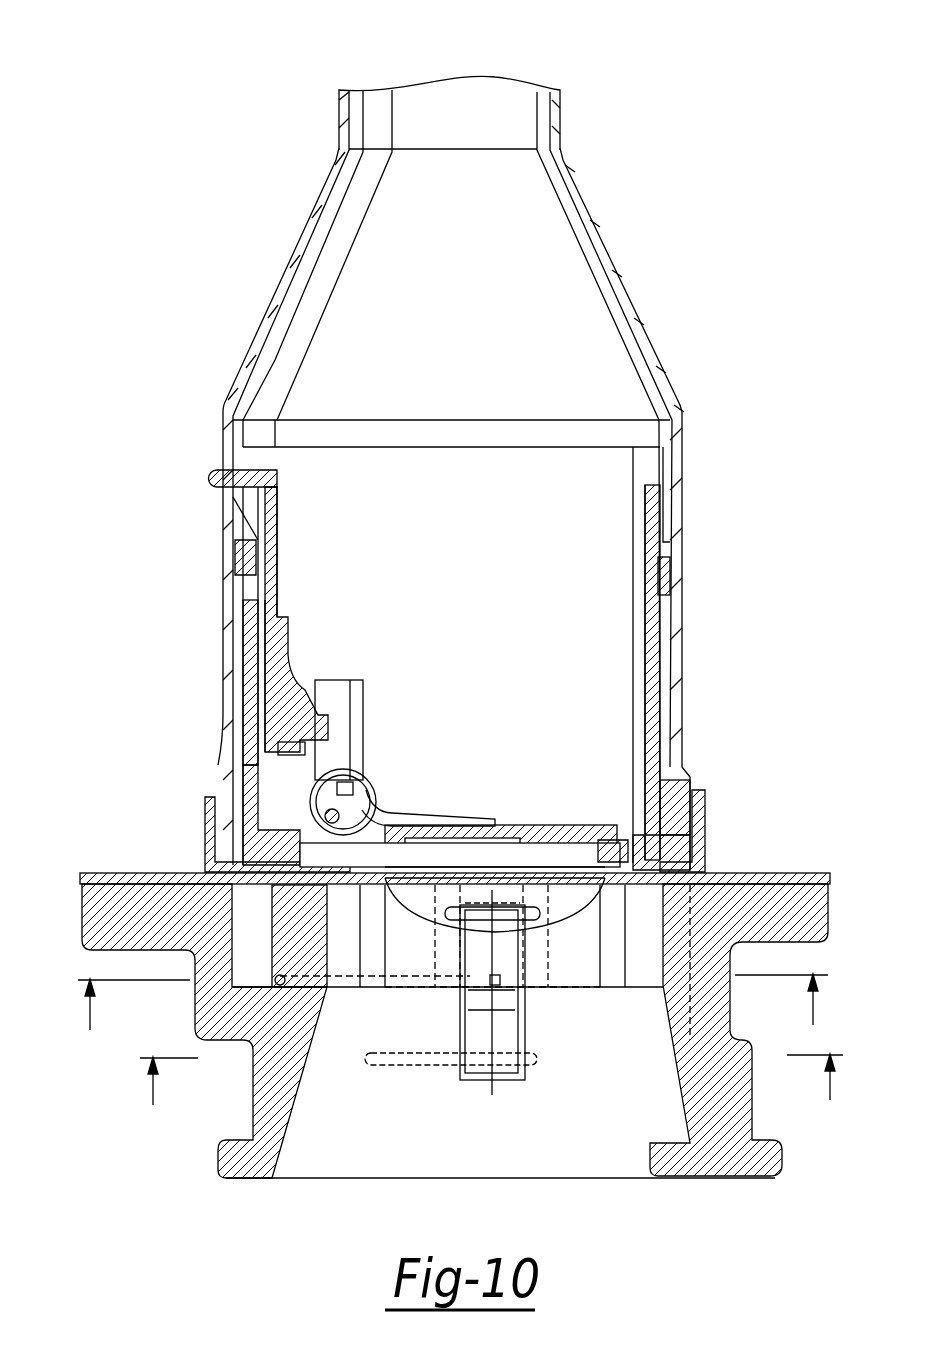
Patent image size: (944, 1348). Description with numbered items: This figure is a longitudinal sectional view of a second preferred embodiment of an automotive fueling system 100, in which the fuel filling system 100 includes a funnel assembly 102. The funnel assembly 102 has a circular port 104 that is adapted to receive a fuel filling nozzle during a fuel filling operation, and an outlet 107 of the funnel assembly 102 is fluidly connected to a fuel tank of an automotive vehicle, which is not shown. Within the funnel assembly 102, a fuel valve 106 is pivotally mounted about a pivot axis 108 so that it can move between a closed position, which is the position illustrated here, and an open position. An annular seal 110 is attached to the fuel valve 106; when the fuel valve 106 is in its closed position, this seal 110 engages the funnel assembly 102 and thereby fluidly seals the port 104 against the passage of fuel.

The fuel filling system 100 is at (770, 767).
The funnel assembly 102 is at (205, 833).
The circular port 104 is at (612, 870).
The fuel valve 106 is at (547, 825).
The outlet 107 is at (550, 118).
The pivot axis 108 is at (330, 812).
The annular seal 110 is at (620, 856).